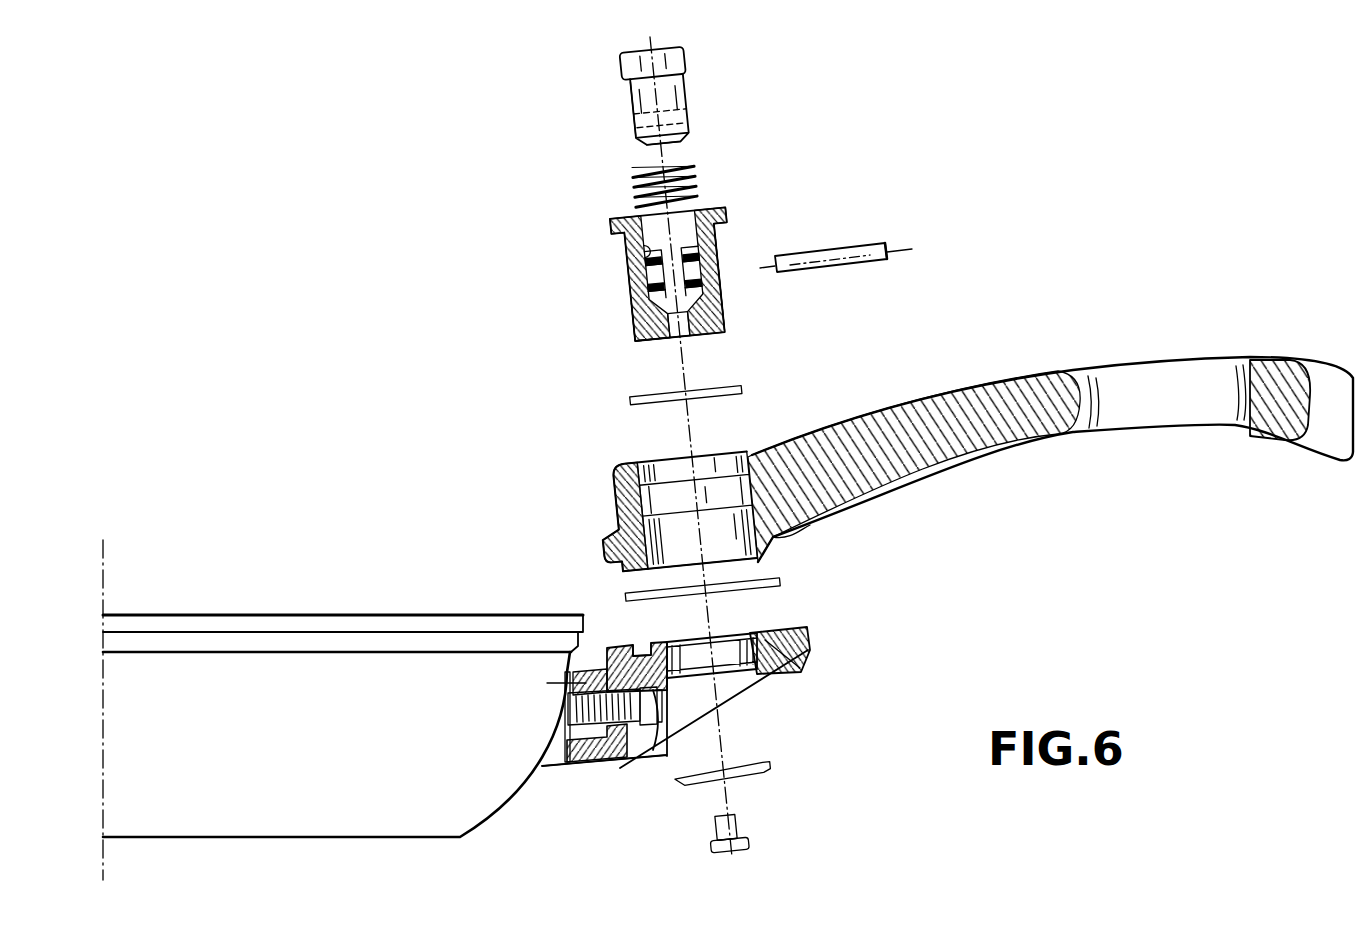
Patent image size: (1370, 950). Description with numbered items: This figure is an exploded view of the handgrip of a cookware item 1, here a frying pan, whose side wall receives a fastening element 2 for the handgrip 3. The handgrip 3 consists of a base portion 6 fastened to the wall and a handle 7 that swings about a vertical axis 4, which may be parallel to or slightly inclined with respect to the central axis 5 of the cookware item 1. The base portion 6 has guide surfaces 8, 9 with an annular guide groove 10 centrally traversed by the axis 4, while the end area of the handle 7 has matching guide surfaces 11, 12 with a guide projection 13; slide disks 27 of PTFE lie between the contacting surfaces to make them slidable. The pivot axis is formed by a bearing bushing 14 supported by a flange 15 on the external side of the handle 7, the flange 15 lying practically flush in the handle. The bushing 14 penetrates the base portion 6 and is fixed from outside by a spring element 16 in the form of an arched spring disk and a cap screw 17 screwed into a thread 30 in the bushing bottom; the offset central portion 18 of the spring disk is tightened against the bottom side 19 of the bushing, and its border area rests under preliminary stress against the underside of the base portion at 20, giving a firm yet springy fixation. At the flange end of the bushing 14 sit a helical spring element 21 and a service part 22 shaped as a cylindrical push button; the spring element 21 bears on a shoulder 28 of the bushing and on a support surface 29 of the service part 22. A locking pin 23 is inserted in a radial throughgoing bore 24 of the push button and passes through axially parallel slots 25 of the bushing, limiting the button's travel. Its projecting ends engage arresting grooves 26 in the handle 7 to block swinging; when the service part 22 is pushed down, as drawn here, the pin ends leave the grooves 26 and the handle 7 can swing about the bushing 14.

The cookware item 1 is at (228, 672).
The fastening element 2 is at (547, 763).
The handgrip 3 is at (1058, 352).
The vertical axis 4 is at (694, 440).
The central axis 5 is at (106, 565).
The base portion 6 is at (792, 676).
The handle 7 is at (1325, 387).
The guide surface 8 is at (603, 655).
The guide surface 9 is at (646, 648).
The annular guide groove 10 is at (812, 663).
The guide surface 11 is at (618, 569).
The guide surface 12 is at (606, 557).
The guide projection 13 is at (782, 534).
The bearing bushing 14 is at (714, 317).
The flange 15 is at (728, 215).
The spring element 16 is at (765, 768).
The cap screw 17 is at (748, 832).
The offset central portion 18 is at (714, 785).
The bottom side 19 is at (696, 340).
The underside of the base portion 20 is at (776, 688).
The spring element 21 is at (690, 167).
The service part 22 is at (686, 62).
The locking pin 23 is at (880, 249).
The radial throughgoing bore 24 is at (633, 126).
The slots 25 is at (712, 273).
The arresting grooves 26 is at (612, 502).
The slide disks 27 is at (744, 390).
The shoulder 28 is at (645, 251).
The support surface 29 is at (628, 88).
The thread 30 is at (640, 333).